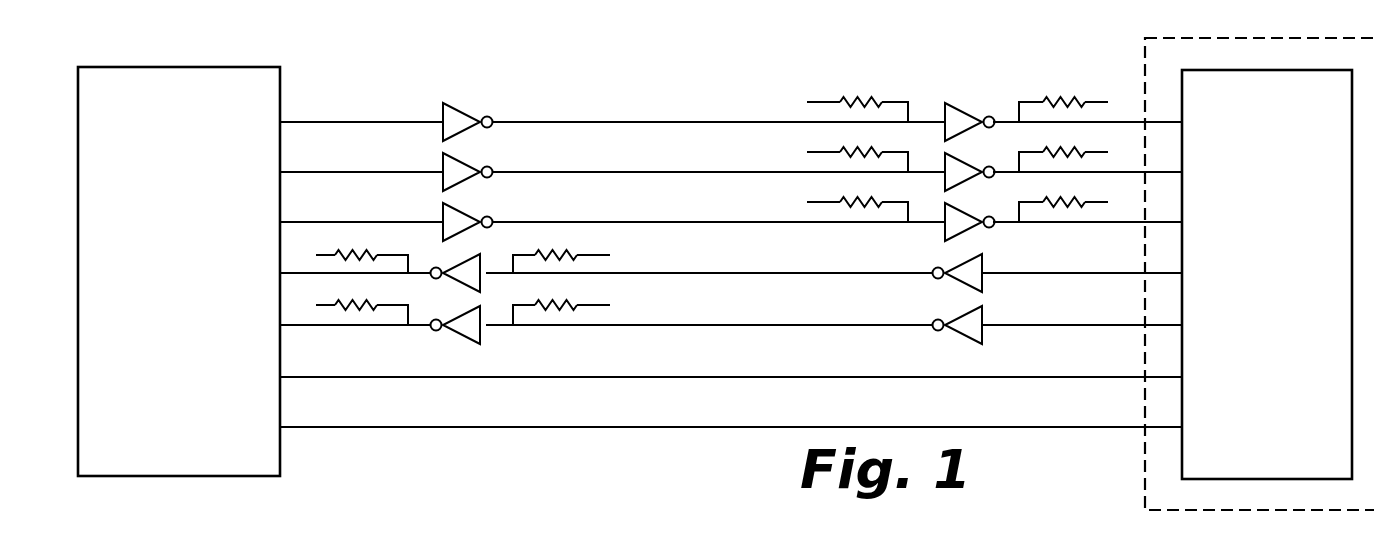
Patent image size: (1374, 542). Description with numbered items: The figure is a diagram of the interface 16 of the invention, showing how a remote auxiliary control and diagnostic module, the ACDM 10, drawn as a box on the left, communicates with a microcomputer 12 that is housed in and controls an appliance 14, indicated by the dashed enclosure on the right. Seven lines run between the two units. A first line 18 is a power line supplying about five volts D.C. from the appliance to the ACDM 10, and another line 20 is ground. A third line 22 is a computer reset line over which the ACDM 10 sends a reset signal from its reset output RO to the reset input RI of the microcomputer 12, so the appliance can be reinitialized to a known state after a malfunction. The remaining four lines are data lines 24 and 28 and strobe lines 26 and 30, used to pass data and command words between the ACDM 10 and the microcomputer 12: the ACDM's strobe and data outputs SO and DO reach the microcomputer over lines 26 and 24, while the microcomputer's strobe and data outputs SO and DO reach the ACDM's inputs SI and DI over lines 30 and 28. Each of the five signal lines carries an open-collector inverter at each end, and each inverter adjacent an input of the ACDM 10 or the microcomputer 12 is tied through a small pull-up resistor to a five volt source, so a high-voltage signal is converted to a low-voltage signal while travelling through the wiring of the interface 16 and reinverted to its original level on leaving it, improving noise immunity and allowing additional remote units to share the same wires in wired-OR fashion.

The auxiliary control and diagnostic module 10 is at (116, 472).
The microcomputer 12 is at (1282, 308).
The appliance 14 is at (1300, 506).
The interface 16 is at (735, 107).
The first line 18 is at (716, 377).
The ground line 20 is at (730, 427).
The computer reset line 22 is at (676, 122).
The data line 24 is at (688, 172).
The strobe line 26 is at (697, 222).
The data line 28 is at (704, 273).
The strobe line 30 is at (708, 325).